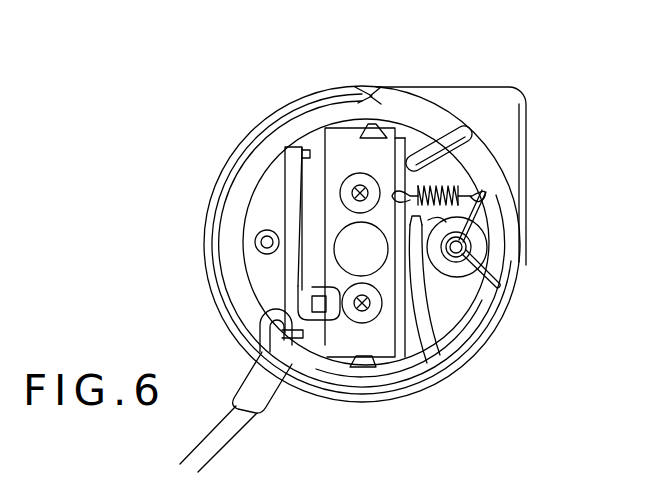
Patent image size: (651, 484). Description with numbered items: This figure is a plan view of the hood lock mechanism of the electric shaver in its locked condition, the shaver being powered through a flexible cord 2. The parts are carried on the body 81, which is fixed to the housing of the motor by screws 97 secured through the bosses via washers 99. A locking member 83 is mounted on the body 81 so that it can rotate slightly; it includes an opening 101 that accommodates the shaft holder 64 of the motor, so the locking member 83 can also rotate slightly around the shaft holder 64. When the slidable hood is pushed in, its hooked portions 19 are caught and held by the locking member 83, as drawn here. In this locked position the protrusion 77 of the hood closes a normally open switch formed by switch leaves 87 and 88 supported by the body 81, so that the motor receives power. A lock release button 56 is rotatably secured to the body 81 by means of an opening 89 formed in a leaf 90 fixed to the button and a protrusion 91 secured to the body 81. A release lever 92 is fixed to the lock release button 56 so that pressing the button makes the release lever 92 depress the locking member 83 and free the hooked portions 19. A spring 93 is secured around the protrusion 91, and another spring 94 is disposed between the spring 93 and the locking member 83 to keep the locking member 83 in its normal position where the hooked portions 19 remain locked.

The flexible cord 2 is at (218, 440).
The hooked portions 19 is at (370, 127).
The lock release button 56 is at (473, 97).
The shaft holder 64 is at (405, 272).
The protrusion 77 is at (288, 103).
The body 81 is at (278, 110).
The locking member 83 is at (340, 340).
The switch leaf 87 is at (290, 192).
The switch leaf 88 is at (310, 280).
The opening 89 is at (472, 239).
The leaf 90 is at (493, 245).
The protrusion 91 is at (520, 293).
The release lever 92 is at (430, 138).
The spring 93 is at (478, 198).
The spring 94 is at (484, 186).
The screws 97 is at (353, 178).
The washers 99 is at (348, 182).
The opening 101 is at (425, 282).